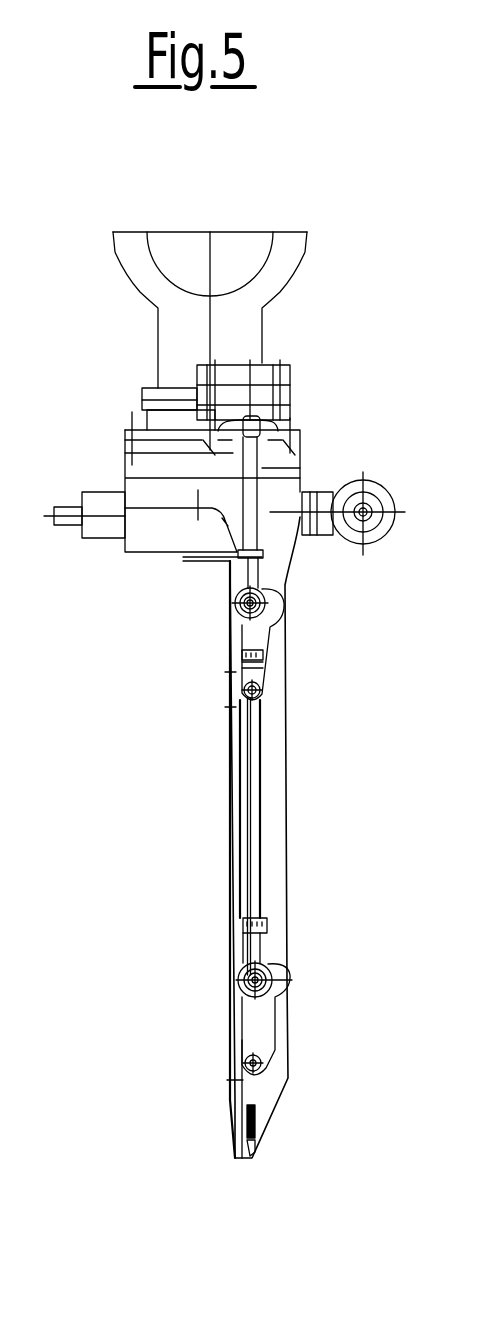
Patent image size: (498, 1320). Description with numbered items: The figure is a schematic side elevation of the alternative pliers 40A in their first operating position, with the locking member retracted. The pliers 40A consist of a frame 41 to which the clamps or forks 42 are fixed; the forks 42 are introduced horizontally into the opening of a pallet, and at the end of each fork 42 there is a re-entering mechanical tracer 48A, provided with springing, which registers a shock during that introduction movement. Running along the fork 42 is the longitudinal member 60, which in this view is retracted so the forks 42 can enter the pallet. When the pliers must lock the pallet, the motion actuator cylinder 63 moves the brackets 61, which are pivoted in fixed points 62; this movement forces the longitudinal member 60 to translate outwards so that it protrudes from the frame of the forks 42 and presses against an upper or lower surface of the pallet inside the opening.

The pliers 40A is at (125, 375).
The frame 41 is at (118, 448).
The fork 42 is at (275, 787).
The re-entering mechanical tracer 48A is at (257, 1122).
The longitudinal member 60 is at (237, 738).
The bracket 61 is at (272, 632).
The fixed point 62 is at (280, 600).
The motion actuator cylinder 63 is at (250, 836).